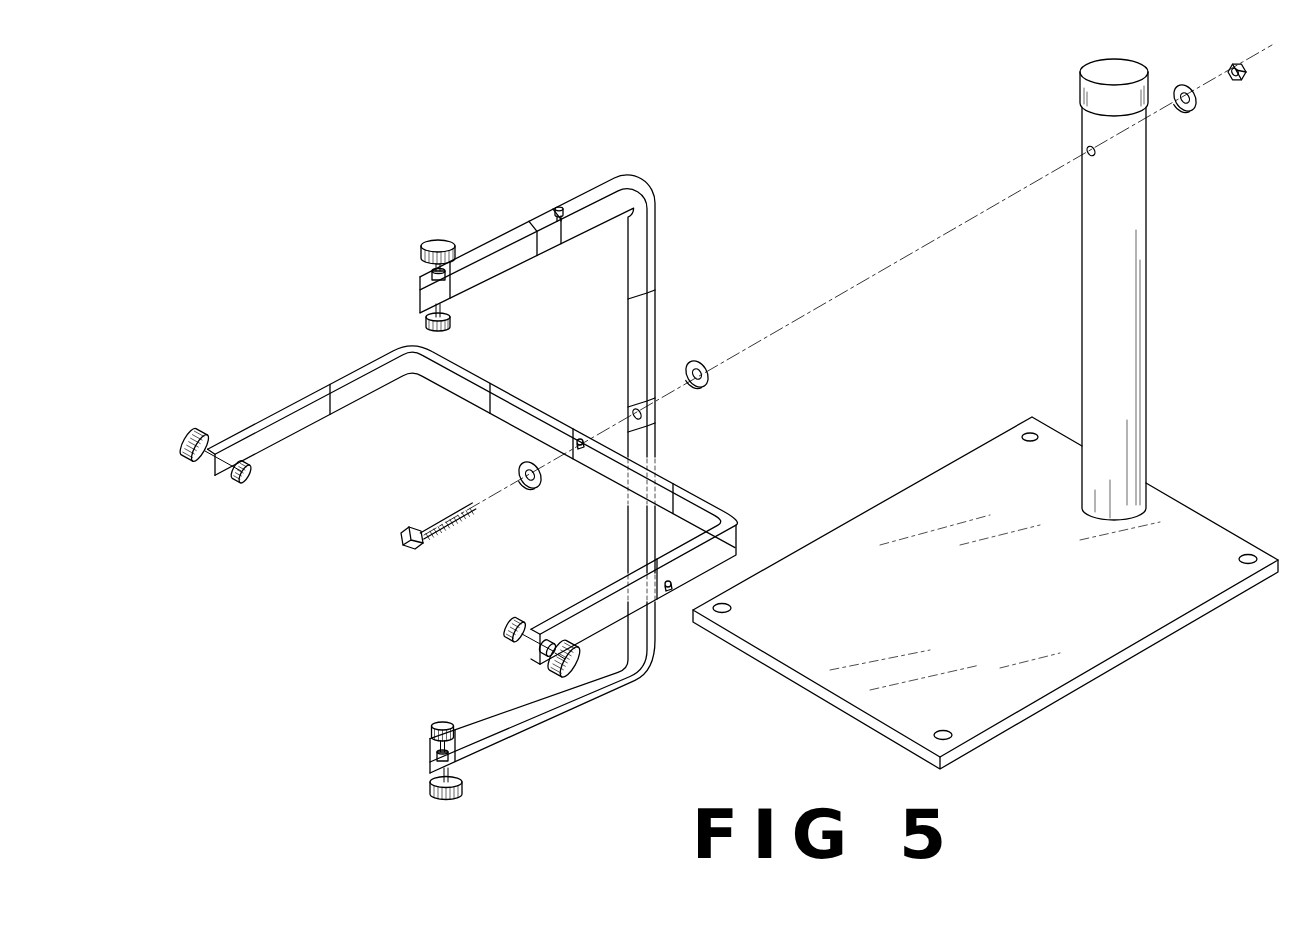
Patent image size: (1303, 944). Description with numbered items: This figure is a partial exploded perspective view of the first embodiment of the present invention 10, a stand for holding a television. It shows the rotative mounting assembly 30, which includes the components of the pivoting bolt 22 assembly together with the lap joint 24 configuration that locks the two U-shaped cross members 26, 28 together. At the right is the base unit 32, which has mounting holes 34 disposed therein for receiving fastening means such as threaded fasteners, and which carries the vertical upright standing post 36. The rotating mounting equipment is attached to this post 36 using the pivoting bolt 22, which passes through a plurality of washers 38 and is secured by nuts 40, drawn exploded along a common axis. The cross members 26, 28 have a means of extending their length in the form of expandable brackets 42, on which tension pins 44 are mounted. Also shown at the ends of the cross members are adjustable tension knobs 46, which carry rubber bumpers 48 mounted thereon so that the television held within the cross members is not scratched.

The present invention 10 is at (1208, 319).
The pivoting bolt 22 is at (440, 528).
The lap joint 24 is at (656, 420).
The U-shaped cross member 26 is at (609, 452).
The U-shaped cross member 28 is at (525, 404).
The rotative mounting assembly 30 is at (664, 333).
The base unit 32 is at (985, 562).
The mounting holes 34 is at (1240, 563).
The vertical upright standing post 36 is at (1146, 338).
The washers 38 is at (519, 477).
The nuts 40 is at (1233, 82).
The expandable brackets 42 is at (392, 352).
The tension pins 44 is at (559, 207).
The adjustable tension knobs 46 is at (215, 448).
The rubber bumpers 48 is at (438, 333).